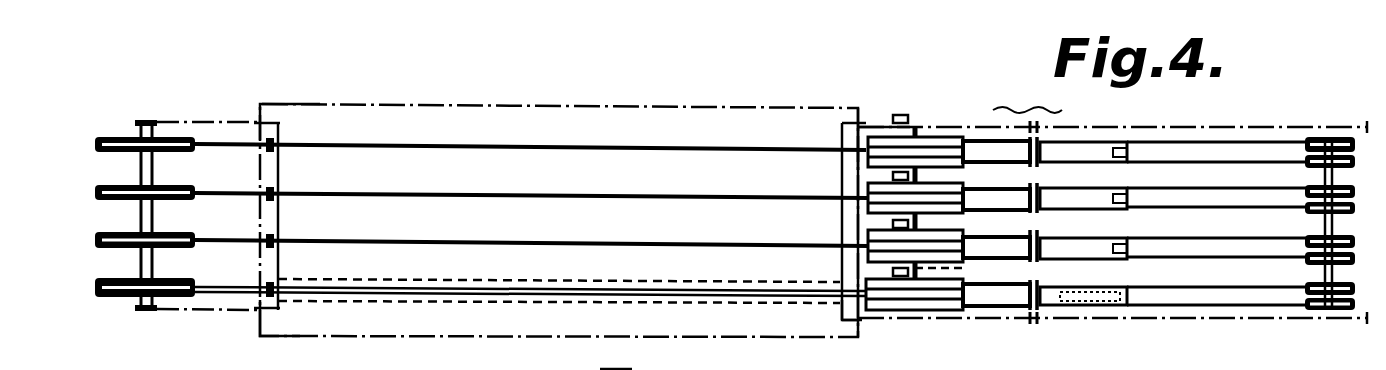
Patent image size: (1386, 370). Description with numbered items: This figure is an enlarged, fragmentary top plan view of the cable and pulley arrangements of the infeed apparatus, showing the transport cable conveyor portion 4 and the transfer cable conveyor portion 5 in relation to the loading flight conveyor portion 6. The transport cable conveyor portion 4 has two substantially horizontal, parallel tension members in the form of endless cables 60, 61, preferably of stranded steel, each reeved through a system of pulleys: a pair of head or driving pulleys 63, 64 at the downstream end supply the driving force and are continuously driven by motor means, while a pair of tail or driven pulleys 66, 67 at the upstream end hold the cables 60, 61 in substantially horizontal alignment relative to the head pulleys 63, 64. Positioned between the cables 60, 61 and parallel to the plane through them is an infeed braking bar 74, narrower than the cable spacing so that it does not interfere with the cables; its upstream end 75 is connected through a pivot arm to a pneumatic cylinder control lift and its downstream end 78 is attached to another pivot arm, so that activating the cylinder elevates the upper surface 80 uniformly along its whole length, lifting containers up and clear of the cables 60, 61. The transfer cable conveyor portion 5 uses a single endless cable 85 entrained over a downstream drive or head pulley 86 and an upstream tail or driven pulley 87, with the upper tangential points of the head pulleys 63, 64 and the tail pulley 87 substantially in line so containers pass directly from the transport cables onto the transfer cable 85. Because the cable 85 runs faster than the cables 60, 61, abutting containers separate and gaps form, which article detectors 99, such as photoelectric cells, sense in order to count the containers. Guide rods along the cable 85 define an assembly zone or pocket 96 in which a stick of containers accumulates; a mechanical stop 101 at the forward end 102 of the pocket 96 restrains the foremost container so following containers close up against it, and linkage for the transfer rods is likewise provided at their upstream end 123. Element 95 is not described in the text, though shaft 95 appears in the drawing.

The transport cable conveyor portion 4 is at (1112, 337).
The transfer cable conveyor portion 5 is at (212, 327).
The loading flight conveyor portion 6 is at (320, 334).
The endless cable 60 is at (1196, 308).
The endless cable 61 is at (1205, 291).
The head pulley 63 is at (912, 312).
The head pulley 64 is at (870, 283).
The tail pulley 66 is at (1318, 316).
The tail pulley 67 is at (1340, 287).
The infeed braking bar 74 is at (1107, 290).
The upstream end 75 is at (1118, 291).
The downstream end 78 is at (986, 312).
The upper surface 80 is at (1022, 310).
The endless cable 85 is at (700, 298).
The head pulley 86 is at (122, 298).
The tail pulley 87 is at (857, 302).
The drive shaft 95 is at (598, 367).
The assembly pocket 96 is at (637, 282).
The article detector 99 is at (953, 270).
The mechanical stop 101 is at (269, 288).
The forward end 102 is at (275, 291).
The upstream end 123 is at (832, 302).